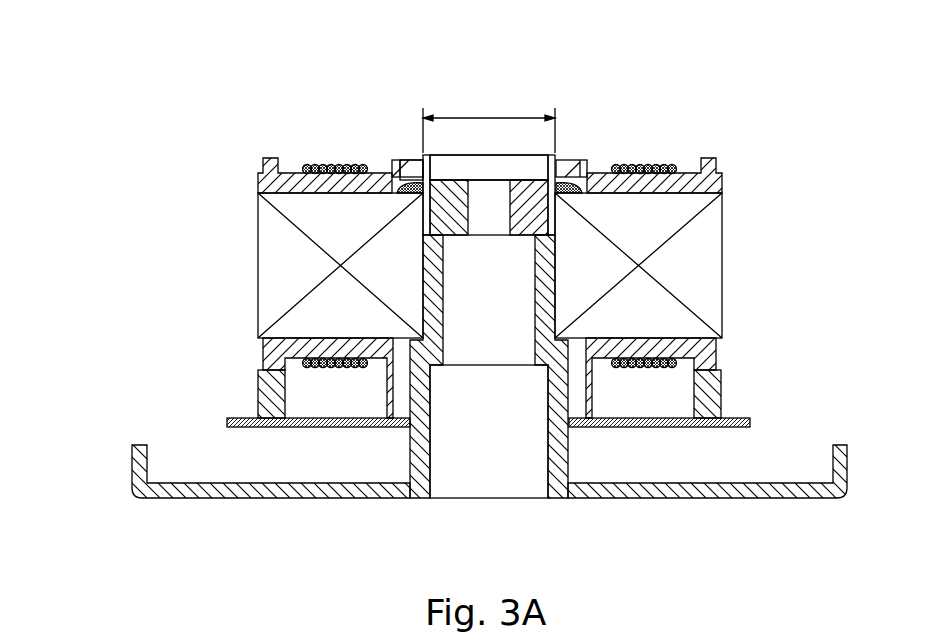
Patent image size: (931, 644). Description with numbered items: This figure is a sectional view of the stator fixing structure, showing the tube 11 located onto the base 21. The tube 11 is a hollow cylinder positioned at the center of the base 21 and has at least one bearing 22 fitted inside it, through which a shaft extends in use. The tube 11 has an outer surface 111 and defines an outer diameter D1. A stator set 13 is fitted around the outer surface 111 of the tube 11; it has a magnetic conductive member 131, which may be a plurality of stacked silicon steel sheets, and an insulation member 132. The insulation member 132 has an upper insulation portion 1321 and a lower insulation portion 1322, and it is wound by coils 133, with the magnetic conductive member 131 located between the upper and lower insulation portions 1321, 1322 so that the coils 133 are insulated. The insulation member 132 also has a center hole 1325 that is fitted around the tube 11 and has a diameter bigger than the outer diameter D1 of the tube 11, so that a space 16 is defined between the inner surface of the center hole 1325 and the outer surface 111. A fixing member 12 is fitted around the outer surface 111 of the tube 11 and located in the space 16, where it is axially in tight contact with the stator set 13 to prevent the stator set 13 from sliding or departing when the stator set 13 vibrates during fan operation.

The tube 11 is at (472, 267).
The outer surface 111 is at (413, 160).
The fixing member 12 is at (573, 187).
The stator set 13 is at (382, 225).
The magnetic conductive member 131 is at (287, 246).
The insulation member 132 is at (393, 236).
The upper insulation portion 1321 is at (265, 173).
The lower insulation portion 1322 is at (265, 347).
The coils 133 is at (323, 166).
The center hole 1325 is at (397, 162).
The space 16 is at (404, 170).
The base 21 is at (777, 490).
The bearing 22 is at (558, 168).
The outer diameter D1 is at (489, 125).